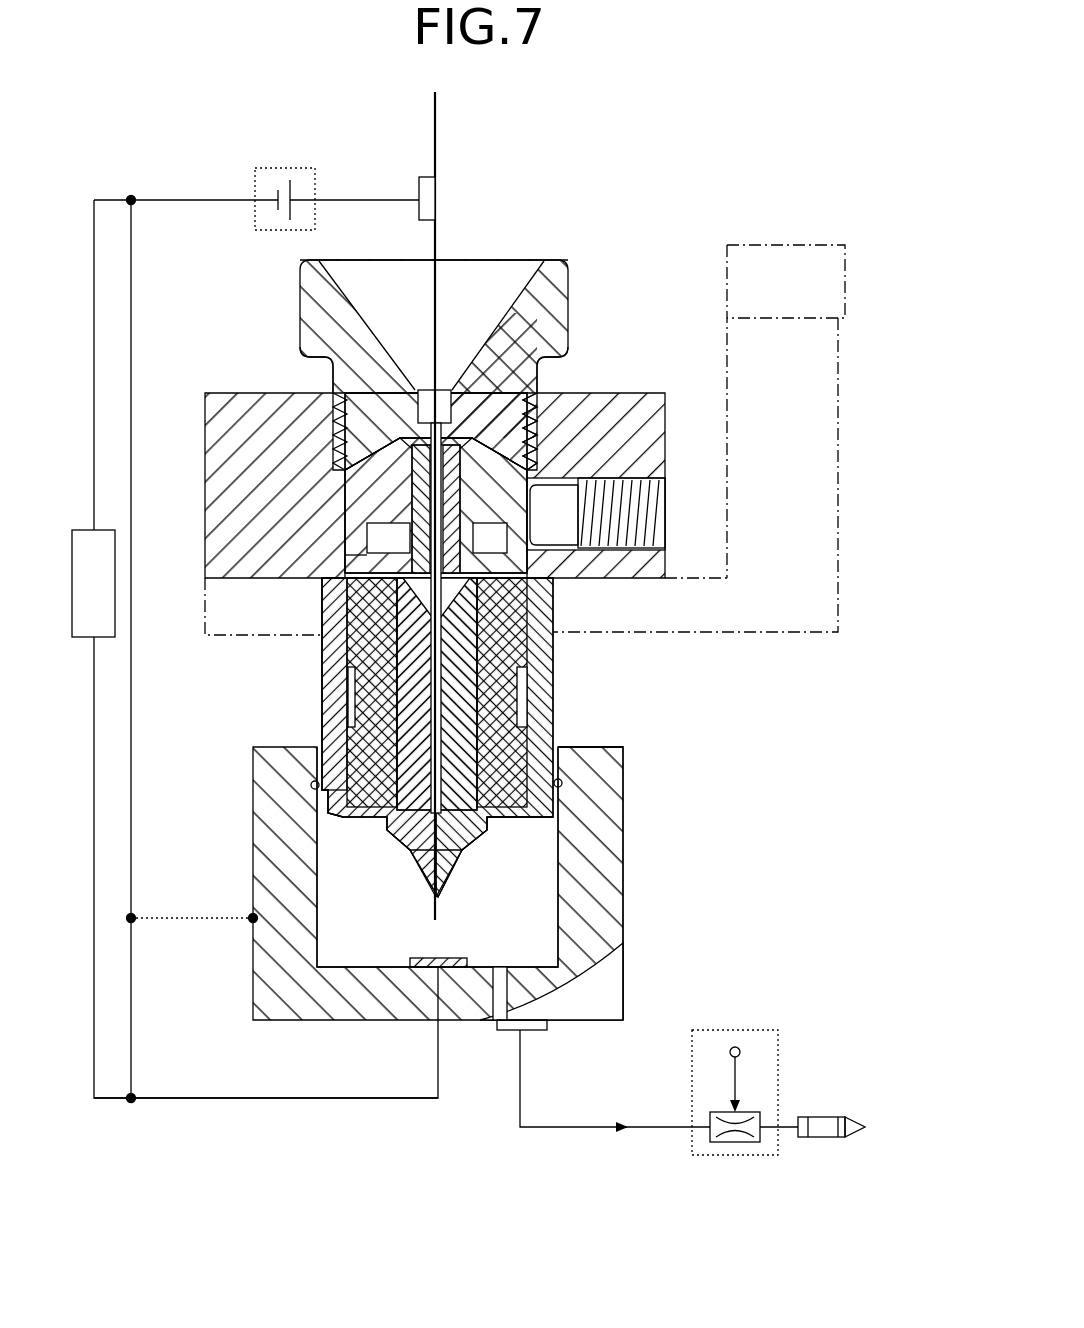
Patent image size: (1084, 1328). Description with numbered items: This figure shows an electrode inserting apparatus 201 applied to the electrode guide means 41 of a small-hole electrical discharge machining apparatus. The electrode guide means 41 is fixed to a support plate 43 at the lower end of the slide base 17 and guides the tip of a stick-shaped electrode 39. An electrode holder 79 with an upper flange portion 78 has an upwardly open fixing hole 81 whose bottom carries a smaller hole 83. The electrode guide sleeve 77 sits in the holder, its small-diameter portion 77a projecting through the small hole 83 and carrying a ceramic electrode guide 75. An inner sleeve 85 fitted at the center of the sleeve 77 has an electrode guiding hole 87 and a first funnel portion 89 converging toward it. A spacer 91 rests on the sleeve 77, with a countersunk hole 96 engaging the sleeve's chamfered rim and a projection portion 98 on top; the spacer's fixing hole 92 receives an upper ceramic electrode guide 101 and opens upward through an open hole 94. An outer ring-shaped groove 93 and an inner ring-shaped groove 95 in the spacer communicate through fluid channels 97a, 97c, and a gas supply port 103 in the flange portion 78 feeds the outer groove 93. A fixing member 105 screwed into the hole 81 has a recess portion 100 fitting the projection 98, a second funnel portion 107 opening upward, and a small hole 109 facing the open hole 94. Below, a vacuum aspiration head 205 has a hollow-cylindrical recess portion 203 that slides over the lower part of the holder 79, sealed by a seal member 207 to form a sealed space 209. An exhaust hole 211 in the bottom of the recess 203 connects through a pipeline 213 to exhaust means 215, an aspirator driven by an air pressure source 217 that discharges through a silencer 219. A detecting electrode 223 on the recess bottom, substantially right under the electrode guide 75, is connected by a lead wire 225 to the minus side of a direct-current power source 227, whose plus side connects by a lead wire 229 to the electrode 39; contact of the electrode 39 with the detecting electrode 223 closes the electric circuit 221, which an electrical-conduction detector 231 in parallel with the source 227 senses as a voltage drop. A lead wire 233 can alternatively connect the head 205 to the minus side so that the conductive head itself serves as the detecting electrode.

The slide base 17 is at (790, 242).
The stick-shaped electrode 39 is at (442, 287).
The electrode guide means 41 is at (226, 660).
The support plate 43 is at (724, 337).
The electrode guide 75 is at (458, 868).
The electrode guide sleeve 77 is at (512, 717).
The small-diameter portion 77a is at (480, 832).
The flange portion 78 is at (632, 395).
The electrode holder 79 is at (556, 768).
The fixing hole 81 is at (350, 735).
The small hole 83 is at (495, 813).
The inner sleeve 85 is at (410, 705).
The electrode guiding hole 87 is at (433, 693).
The first funnel portion 89 is at (340, 648).
The spacer 91 is at (415, 447).
The fixing hole 92 is at (347, 425).
The outer ring-shaped groove 93 is at (380, 540).
The open hole 94 is at (459, 383).
The inner ring-shaped groove 95 is at (385, 515).
The countersunk hole 96 is at (527, 632).
The fluid channel 97a is at (627, 474).
The fluid channel 97c is at (330, 560).
The projection portion 98 is at (530, 365).
The recess portion 100 is at (444, 383).
The electrode guide 101 is at (520, 395).
The gas supply port 103 is at (665, 508).
The fixing member 105 is at (300, 316).
The second funnel portion 107 is at (508, 292).
The small hole 109 is at (427, 383).
The electrode inserting apparatus 201 is at (742, 917).
The recess portion 203 is at (325, 880).
The vacuum aspiration head 205 is at (605, 875).
The seal member 207 is at (561, 785).
The sealed space 209 is at (335, 862).
The exhaust hole 211 is at (505, 967).
The pipeline 213 is at (568, 1130).
The exhaust means 215 is at (752, 1030).
The air pressure source 217 is at (742, 1052).
The silencer 219 is at (824, 1138).
The electrical circuit 221 is at (189, 1136).
The detecting electrode 223 is at (420, 957).
The lead wire 225 is at (131, 264).
The direct-current power source 227 is at (290, 167).
The lead wire 229 is at (370, 200).
The electrical-conduction detector 231 is at (97, 530).
The lead wire 233 is at (195, 940).